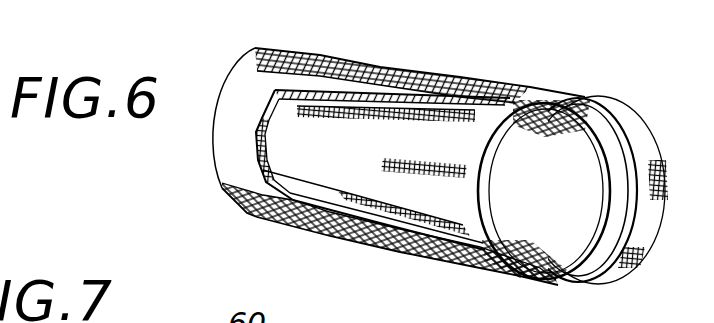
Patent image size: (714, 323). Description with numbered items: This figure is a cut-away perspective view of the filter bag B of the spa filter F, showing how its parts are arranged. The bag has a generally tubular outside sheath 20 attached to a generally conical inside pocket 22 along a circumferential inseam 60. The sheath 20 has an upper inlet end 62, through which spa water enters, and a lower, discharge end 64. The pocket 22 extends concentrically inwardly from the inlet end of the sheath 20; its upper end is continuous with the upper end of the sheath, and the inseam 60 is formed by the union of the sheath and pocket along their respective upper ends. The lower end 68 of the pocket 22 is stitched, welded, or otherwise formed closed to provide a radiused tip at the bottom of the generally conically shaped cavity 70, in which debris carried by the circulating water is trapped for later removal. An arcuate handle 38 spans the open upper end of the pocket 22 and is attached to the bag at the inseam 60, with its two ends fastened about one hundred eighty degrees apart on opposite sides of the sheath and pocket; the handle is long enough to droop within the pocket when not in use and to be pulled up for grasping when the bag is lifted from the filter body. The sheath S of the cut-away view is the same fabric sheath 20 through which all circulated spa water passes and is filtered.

The cylindrical sheath 20 is at (263, 221).
The pocket 22 is at (386, 170).
The handle 38 is at (647, 230).
The circumferential inseam 60 is at (553, 281).
The upper inlet end 62 is at (620, 129).
The lower discharge end 64 is at (247, 68).
The lower end of the pocket 68 is at (256, 127).
The conically shaped cavity 70 is at (497, 96).
The sleeve S is at (313, 51).
The filter bag F is at (432, 78).
The filter bag B is at (544, 191).